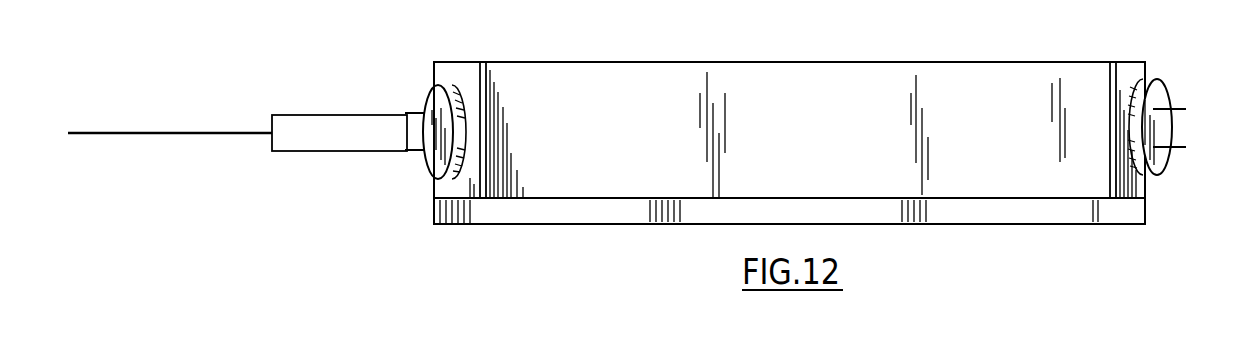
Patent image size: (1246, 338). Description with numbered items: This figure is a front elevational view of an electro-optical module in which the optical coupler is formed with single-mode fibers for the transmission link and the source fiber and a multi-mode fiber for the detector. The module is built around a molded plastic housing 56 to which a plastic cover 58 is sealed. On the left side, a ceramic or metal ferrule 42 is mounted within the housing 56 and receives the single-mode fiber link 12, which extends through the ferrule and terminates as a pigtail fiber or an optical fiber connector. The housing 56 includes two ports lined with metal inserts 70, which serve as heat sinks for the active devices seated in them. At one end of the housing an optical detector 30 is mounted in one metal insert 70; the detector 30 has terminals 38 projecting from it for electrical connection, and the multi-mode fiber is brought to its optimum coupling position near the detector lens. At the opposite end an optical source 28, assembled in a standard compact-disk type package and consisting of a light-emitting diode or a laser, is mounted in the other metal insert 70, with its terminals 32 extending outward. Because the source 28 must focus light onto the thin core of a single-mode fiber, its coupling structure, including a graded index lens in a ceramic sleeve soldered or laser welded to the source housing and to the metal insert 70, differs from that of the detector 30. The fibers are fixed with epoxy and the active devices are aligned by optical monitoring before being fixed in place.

The fiber link 12 is at (157, 132).
The ferrule 42 is at (333, 115).
The terminals 38 is at (416, 151).
The optical detector 30 is at (430, 166).
The molded plastic housing 56 is at (687, 62).
The metal inserts 70 is at (462, 72).
The plastic cover 58 is at (945, 225).
The optical source 28 is at (1160, 97).
The terminals 32 is at (1186, 146).